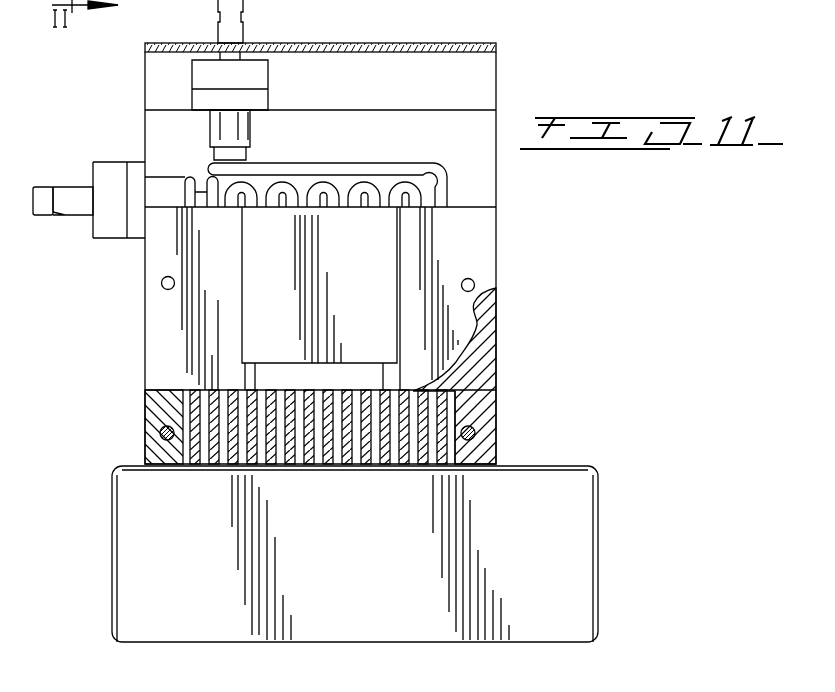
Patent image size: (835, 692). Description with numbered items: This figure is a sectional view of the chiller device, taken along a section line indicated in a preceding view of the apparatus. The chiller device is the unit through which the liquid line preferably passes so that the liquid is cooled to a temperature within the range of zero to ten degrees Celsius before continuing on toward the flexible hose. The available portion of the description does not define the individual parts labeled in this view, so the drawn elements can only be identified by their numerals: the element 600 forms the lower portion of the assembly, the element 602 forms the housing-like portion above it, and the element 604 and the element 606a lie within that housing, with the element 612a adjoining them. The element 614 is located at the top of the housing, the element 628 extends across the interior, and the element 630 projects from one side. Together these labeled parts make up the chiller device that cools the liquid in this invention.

The base 600 is at (561, 490).
The housing 602 is at (498, 47).
The inner block 604 is at (378, 247).
The side member 606a is at (492, 247).
The wedge member 612a is at (441, 398).
The fitting 614 is at (243, 22).
The tube 628 is at (447, 182).
The fitting 630 is at (73, 187).